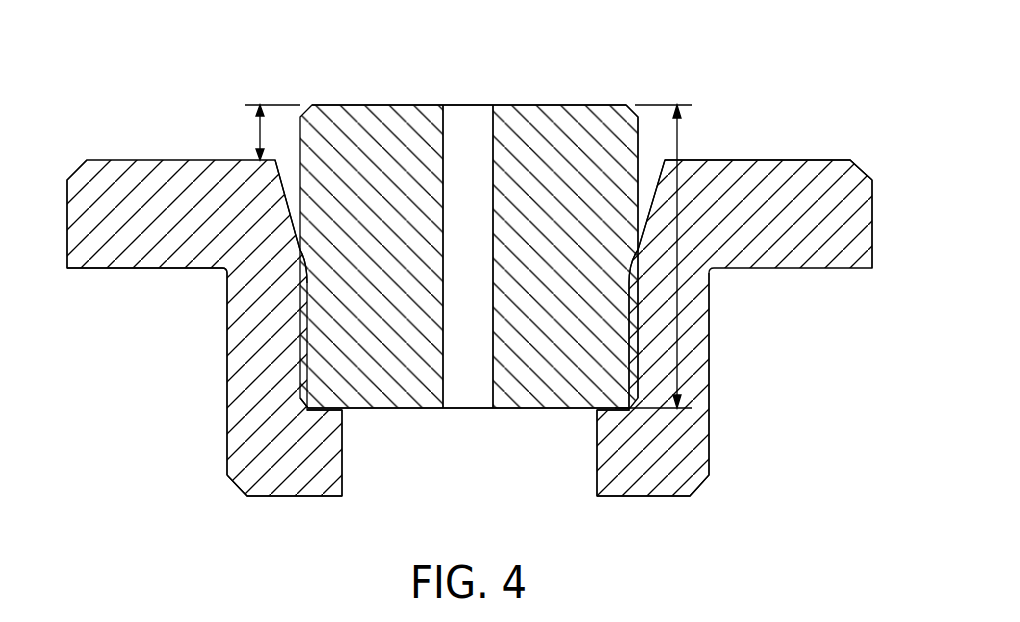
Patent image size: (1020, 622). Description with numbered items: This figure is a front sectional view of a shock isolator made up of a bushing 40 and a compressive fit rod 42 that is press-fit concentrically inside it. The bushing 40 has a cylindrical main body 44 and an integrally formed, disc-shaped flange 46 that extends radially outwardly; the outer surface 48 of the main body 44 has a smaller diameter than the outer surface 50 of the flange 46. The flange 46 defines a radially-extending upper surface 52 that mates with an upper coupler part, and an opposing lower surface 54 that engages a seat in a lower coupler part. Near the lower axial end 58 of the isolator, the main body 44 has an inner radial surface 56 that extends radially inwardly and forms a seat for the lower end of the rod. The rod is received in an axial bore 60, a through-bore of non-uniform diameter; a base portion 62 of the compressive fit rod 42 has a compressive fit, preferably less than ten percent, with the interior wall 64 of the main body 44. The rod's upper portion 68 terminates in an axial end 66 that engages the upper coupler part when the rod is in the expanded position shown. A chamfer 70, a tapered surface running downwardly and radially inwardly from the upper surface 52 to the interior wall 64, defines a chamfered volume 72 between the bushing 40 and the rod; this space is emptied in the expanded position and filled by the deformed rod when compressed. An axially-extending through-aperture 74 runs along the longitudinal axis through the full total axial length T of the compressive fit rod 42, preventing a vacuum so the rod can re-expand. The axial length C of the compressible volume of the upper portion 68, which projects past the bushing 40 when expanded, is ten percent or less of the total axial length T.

The bushing 40 is at (118, 208).
The compressive fit rod 42 is at (355, 160).
The main body 44 is at (250, 357).
The flange 46 is at (100, 225).
The outer surface 48 is at (712, 318).
The outer surface 50 is at (873, 222).
The upper surface 52 is at (812, 160).
The lower surface 54 is at (142, 270).
The inner radial surface 56 is at (305, 410).
The lower axial end 58 is at (283, 497).
The axial bore 60 is at (420, 466).
The base portion 62 is at (613, 390).
The interior wall 64 is at (633, 333).
The axial end 66 is at (547, 105).
The upper portion 68 is at (562, 160).
The chamfer 70 is at (653, 208).
The chamfered volume 72 is at (287, 185).
The axially-extending through-aperture 74 is at (468, 140).
The axial length of the compressible volume C is at (258, 111).
The total axial length T is at (680, 258).